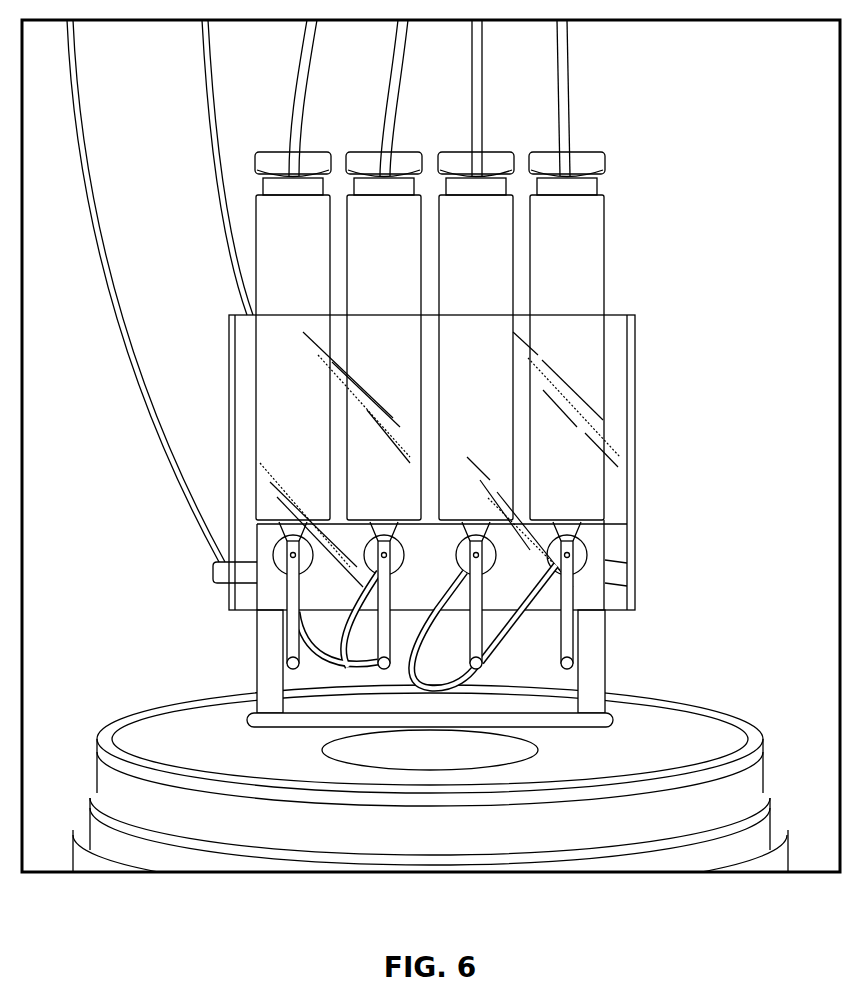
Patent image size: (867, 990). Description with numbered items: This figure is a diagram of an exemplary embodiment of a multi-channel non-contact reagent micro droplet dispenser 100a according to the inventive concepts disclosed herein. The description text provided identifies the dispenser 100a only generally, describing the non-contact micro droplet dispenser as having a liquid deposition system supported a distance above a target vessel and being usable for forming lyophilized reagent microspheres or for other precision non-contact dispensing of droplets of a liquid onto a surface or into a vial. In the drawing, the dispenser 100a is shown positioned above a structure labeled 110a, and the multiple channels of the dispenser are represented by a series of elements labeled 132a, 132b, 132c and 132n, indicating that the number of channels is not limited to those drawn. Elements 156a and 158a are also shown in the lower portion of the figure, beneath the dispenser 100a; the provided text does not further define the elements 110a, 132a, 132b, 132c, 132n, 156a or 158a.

The multi-channel non-contact reagent micro droplet dispenser 100a is at (205, 347).
The platform 110a is at (670, 728).
The dispensing nozzle 132a is at (292, 655).
The dispensing nozzle 132b is at (380, 633).
The dispensing nozzle 132c is at (470, 638).
The dispensing nozzle 132n is at (573, 642).
The base plate 156a is at (563, 728).
The opening 158a is at (399, 770).